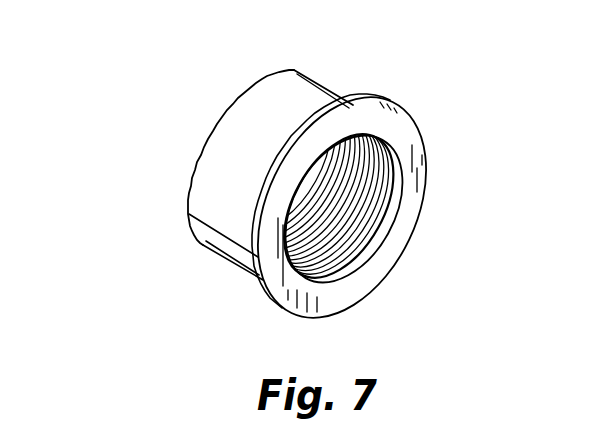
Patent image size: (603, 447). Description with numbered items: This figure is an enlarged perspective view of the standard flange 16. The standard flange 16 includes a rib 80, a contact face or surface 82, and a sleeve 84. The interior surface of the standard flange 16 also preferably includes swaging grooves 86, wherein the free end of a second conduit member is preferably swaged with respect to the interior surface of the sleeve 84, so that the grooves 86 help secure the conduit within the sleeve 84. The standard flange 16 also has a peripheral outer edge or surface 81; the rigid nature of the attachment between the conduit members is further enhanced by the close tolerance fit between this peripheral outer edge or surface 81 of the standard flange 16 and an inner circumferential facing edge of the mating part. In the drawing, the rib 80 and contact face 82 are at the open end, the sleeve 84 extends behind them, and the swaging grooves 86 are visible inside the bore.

The standard flange 16 is at (352, 184).
The rib 80 is at (377, 98).
The peripheral outer edge 81 is at (342, 116).
The contact face 82 is at (395, 130).
The sleeve 84 is at (266, 173).
The swaging grooves 86 is at (360, 232).